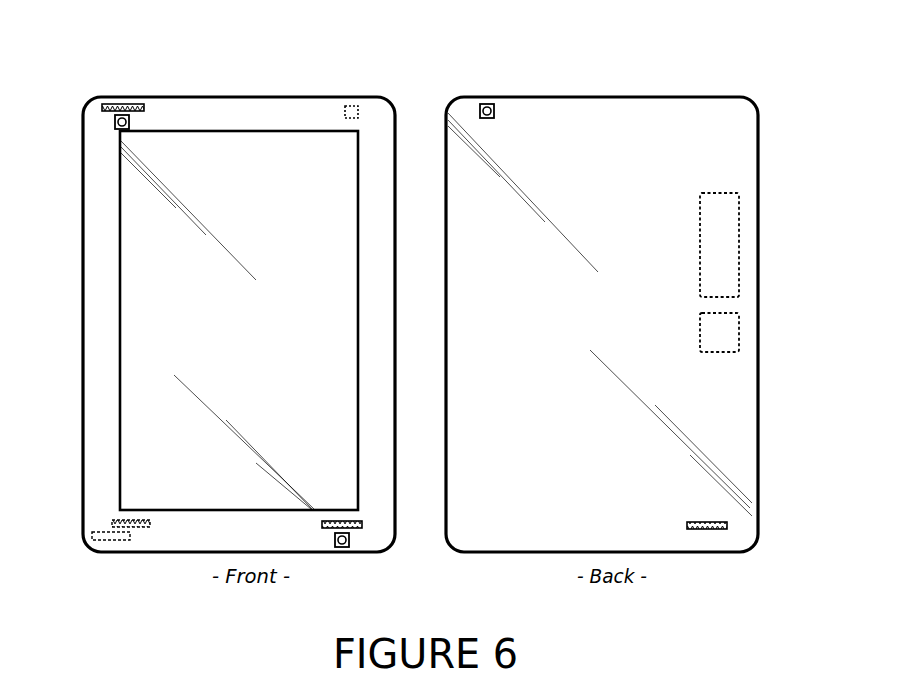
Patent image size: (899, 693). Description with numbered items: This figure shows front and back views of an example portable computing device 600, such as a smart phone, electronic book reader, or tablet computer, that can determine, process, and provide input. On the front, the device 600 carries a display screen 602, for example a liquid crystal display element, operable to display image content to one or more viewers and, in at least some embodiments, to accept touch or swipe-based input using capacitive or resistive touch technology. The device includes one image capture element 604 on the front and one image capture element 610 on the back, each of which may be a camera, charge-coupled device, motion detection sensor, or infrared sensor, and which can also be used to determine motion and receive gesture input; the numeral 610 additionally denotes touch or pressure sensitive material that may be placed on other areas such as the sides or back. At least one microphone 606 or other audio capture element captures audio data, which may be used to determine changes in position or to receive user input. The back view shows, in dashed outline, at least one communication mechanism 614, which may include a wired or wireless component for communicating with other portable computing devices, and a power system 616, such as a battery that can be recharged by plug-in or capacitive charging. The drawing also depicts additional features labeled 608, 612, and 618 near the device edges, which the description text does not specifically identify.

The portable computing device 600 is at (789, 102).
The display screen 602 is at (118, 240).
The image capture element 604 is at (115, 121).
The microphone 606 is at (130, 103).
The speaker 608 is at (355, 529).
The image capture element 610 is at (352, 106).
The microphone 612 is at (133, 528).
The communication mechanism 614 is at (739, 262).
The power system 616 is at (739, 334).
The port 618 is at (109, 541).